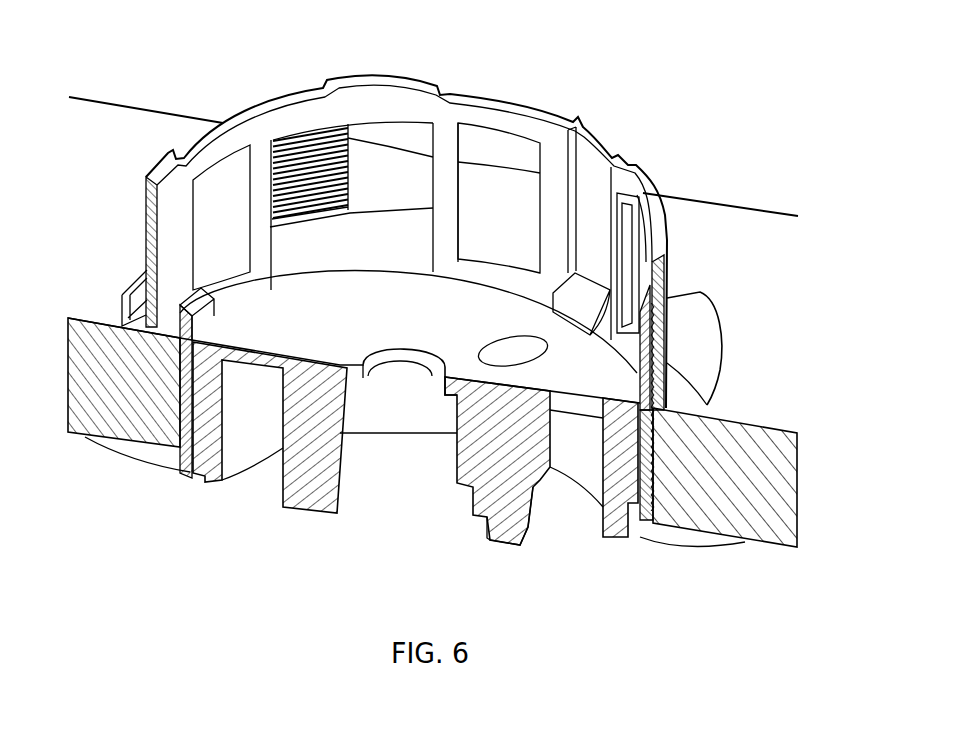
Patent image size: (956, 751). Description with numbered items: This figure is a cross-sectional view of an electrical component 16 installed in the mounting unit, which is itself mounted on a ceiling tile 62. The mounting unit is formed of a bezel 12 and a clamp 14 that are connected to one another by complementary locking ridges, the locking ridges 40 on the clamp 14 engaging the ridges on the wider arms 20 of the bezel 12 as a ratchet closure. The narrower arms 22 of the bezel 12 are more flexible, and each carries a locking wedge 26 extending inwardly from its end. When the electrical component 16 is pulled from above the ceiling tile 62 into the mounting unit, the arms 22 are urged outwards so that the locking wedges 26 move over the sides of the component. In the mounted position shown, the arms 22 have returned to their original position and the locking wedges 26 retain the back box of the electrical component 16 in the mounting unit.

The bezel 12 is at (179, 482).
The clamp 14 is at (410, 68).
The electrical component 16 is at (533, 523).
The arms 20 is at (405, 228).
The arms 22 is at (184, 366).
The locking wedge 26 is at (212, 303).
The locking ridges 40 is at (318, 152).
The ceiling tile 62 is at (118, 116).